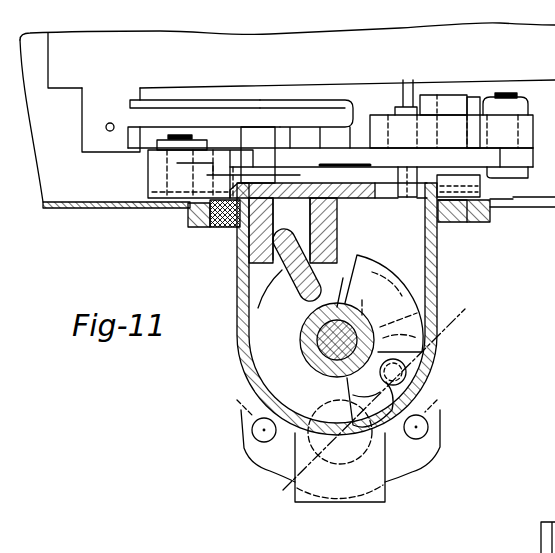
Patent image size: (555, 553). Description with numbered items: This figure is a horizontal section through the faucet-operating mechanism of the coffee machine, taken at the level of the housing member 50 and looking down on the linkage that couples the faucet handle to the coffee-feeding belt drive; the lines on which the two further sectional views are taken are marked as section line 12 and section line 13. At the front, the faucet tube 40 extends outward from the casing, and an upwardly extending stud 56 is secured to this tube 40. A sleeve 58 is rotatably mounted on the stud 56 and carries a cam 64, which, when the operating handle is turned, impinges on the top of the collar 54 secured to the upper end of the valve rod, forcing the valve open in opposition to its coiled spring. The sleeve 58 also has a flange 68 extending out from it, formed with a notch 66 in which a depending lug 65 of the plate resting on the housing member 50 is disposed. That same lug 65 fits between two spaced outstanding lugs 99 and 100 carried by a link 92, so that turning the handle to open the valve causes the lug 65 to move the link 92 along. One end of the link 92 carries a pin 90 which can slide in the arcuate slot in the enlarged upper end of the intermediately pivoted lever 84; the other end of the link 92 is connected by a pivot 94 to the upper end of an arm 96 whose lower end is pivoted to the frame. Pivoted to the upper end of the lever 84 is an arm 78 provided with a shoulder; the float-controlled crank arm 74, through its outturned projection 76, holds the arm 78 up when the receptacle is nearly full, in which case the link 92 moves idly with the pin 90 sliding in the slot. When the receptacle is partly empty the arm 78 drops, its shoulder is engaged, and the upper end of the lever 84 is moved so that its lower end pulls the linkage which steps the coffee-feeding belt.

The section line 12— 12 is at (67, 226).
The section line 13— 13 is at (281, 513).
The tube 40 is at (554, 493).
The housing member 50 is at (242, 353).
The collar 54 is at (407, 373).
The stud 56 is at (316, 355).
The sleeve 58 is at (305, 334).
The cam 64 is at (420, 291).
The lug 65 is at (293, 269).
The notch 66 is at (343, 278).
The flange 68 is at (372, 278).
The crank arm 74 is at (213, 114).
The projection 76 is at (348, 133).
The arm 78 is at (272, 153).
The lever 84 is at (473, 125).
The pin 90 is at (403, 106).
The link 92 is at (470, 181).
The pivot 94 is at (180, 135).
The arm 96 is at (155, 158).
The lug 99 is at (255, 236).
The lug 100 is at (335, 229).